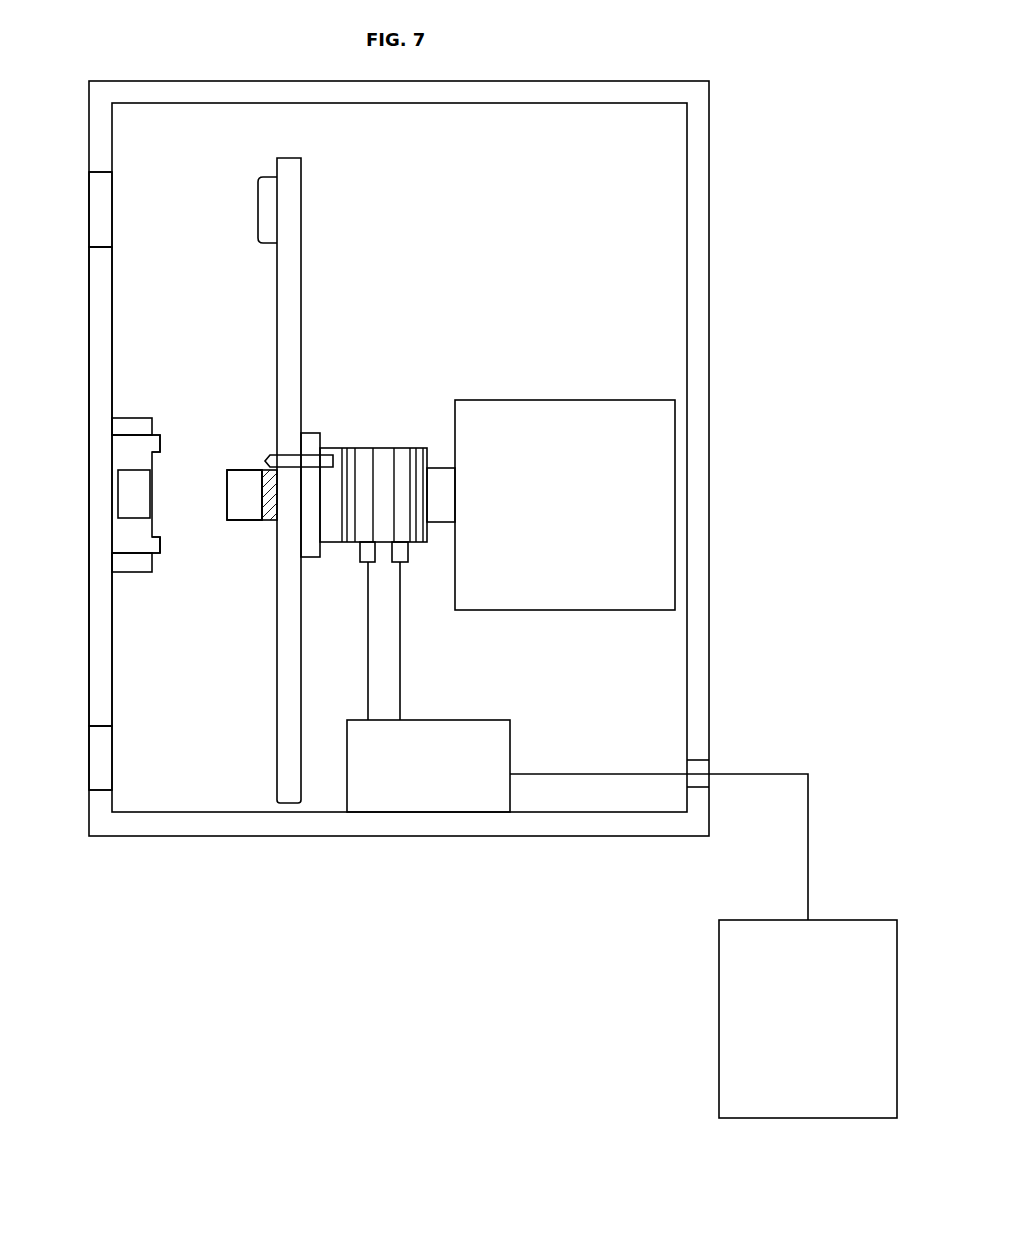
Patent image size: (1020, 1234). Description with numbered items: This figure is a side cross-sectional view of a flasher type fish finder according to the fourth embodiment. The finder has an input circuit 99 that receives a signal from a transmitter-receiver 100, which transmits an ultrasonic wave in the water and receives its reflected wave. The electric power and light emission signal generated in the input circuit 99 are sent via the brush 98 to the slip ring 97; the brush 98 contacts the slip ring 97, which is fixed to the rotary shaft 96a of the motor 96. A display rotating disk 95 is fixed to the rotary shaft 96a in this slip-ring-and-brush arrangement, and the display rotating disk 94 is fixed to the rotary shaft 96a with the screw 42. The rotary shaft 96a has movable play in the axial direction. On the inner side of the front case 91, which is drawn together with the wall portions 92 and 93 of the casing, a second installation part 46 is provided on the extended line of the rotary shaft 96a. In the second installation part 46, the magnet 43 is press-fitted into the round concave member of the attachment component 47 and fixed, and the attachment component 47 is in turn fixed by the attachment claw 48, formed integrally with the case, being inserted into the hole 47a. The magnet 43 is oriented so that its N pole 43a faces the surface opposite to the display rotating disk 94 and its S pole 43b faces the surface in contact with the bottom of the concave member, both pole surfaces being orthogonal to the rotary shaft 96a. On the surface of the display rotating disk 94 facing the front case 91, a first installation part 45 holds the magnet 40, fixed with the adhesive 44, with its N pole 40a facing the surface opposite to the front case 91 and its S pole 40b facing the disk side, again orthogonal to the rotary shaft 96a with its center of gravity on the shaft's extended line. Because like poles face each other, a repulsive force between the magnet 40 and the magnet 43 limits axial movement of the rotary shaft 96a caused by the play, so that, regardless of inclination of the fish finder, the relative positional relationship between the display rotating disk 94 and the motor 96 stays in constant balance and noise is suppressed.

The front case 91 is at (98, 122).
The side wall portion 92 is at (93, 196).
The side wall 93 is at (96, 325).
The display rotating disk 94 is at (279, 650).
The display rotating disk 95 is at (262, 211).
The motor 96 is at (595, 415).
The rotary shaft 96a is at (438, 468).
The slip ring 97 is at (403, 458).
The brush 98 is at (400, 563).
The input circuit 99 is at (460, 740).
The transmitter-receiver 100 is at (865, 942).
The magnet 40 is at (238, 517).
The N pole 40a is at (227, 517).
The S pole 40b is at (270, 470).
The screw 42 is at (323, 445).
The magnet 43 is at (150, 478).
The N pole 43a is at (158, 508).
The S pole 43b is at (118, 478).
The adhesive 44 is at (262, 495).
The first installation part 45 is at (260, 520).
The second installation part 46 is at (131, 515).
The attachment component 47 is at (152, 425).
The hole 47a is at (120, 543).
The attachment claw 48 is at (135, 552).